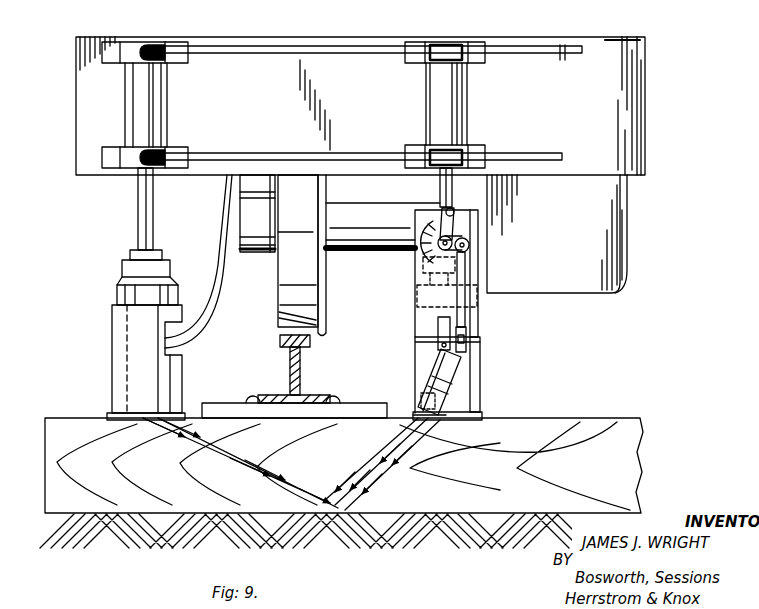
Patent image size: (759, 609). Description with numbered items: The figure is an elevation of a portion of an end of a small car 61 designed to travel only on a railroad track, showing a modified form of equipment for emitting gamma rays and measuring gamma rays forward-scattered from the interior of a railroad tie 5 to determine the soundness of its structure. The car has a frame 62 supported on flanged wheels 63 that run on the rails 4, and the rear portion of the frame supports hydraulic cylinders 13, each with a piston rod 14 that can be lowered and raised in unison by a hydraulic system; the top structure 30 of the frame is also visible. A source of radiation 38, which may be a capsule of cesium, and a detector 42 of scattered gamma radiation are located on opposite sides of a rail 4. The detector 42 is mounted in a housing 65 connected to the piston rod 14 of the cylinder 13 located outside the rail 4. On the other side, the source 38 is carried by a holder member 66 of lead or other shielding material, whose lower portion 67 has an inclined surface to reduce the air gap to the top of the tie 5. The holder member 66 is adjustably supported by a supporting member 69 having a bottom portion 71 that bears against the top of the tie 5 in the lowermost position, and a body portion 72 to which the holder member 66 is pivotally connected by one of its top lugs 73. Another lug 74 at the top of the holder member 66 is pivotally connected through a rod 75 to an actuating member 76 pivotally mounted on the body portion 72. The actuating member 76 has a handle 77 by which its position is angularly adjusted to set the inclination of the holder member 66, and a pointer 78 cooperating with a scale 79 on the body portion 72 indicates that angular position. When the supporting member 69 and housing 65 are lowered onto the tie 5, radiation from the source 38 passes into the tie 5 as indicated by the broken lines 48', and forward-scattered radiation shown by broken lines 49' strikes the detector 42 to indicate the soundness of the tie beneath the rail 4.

The car 61 is at (620, 36).
The guide rod 30 is at (372, 80).
The hydraulic cylinder 13 is at (168, 113).
The piston rod 14 is at (154, 217).
The frame 62 is at (632, 129).
The housing 65 is at (112, 327).
The detector 42 is at (127, 390).
The flanged wheel 63 is at (327, 298).
The rail 4 is at (289, 372).
The body portion 72 is at (480, 321).
The bottom portion 71 is at (484, 416).
The supporting member 69 is at (484, 377).
The handle 77 is at (456, 213).
The actuating member 76 is at (466, 240).
The scale 79 is at (430, 221).
The pointer 78 is at (418, 251).
The rod 75 is at (478, 290).
The lug 74 is at (468, 351).
The top lug 73 is at (437, 347).
The holder member 66 is at (436, 374).
The source of radiation 38 is at (419, 398).
The tie 5 is at (607, 428).
The lower portion 67 is at (490, 453).
The broken lines 49' is at (240, 463).
The broken lines 48' is at (395, 464).